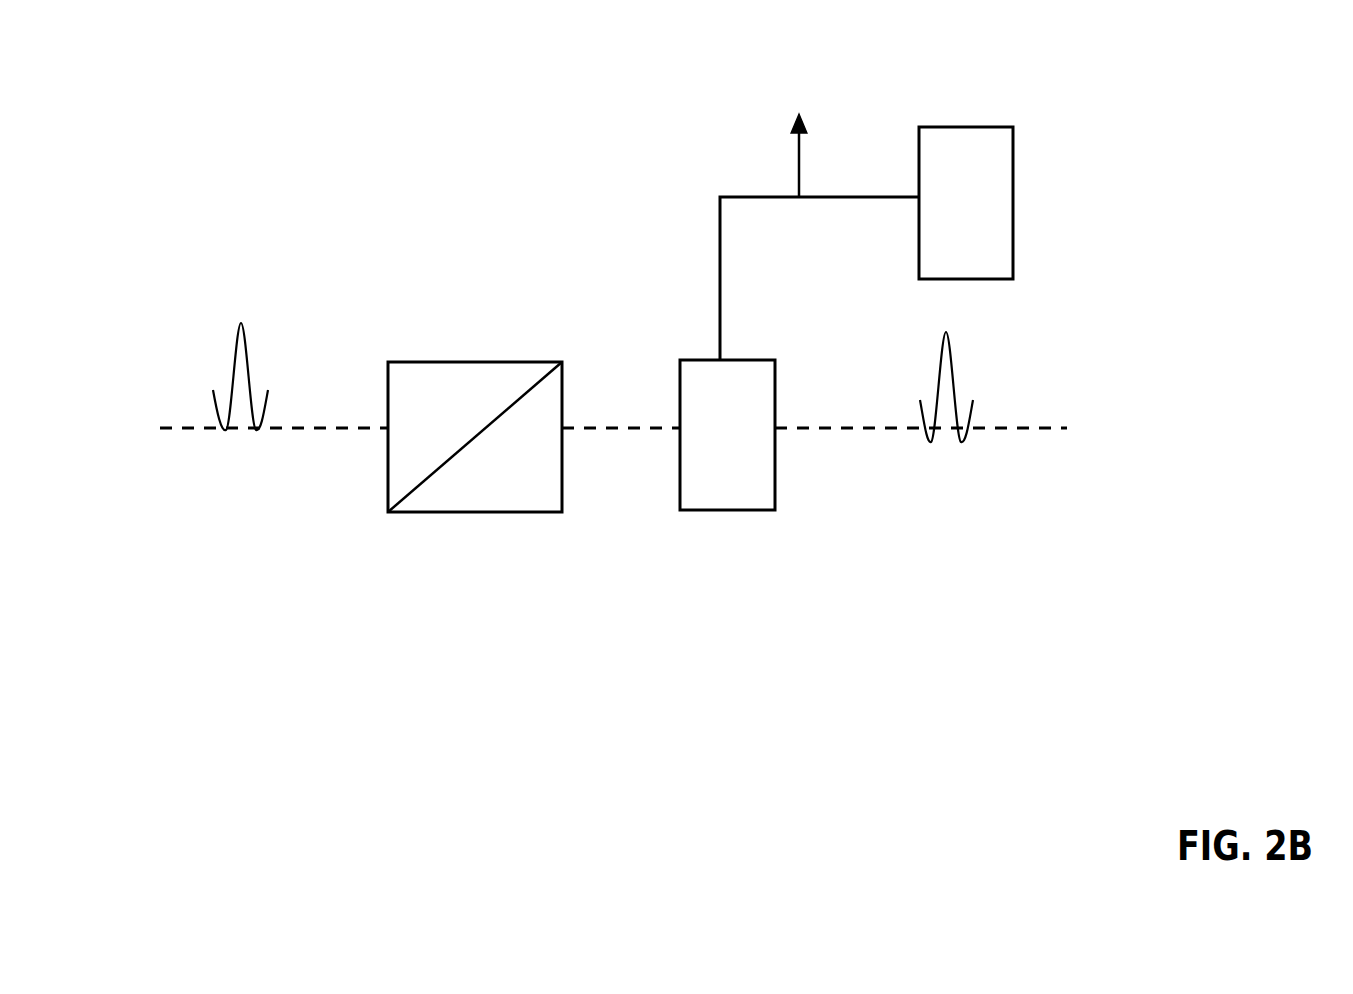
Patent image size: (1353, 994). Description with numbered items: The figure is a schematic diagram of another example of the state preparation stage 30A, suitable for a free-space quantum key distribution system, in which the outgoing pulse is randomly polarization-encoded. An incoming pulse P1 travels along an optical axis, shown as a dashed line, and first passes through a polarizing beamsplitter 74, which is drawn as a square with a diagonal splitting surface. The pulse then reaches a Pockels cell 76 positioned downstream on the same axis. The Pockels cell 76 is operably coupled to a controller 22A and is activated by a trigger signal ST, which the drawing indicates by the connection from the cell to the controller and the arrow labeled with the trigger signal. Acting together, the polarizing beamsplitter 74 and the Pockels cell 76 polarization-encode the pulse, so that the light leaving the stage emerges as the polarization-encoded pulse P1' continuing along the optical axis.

The state preparation stage 30A is at (347, 103).
The pulse P1 is at (223, 347).
The polarizing beamsplitter 74 is at (467, 362).
The Pockels cell 76 is at (746, 451).
The trigger signal ST is at (797, 152).
The controller 22A is at (994, 220).
The polarization-encoded pulse P1' is at (985, 371).